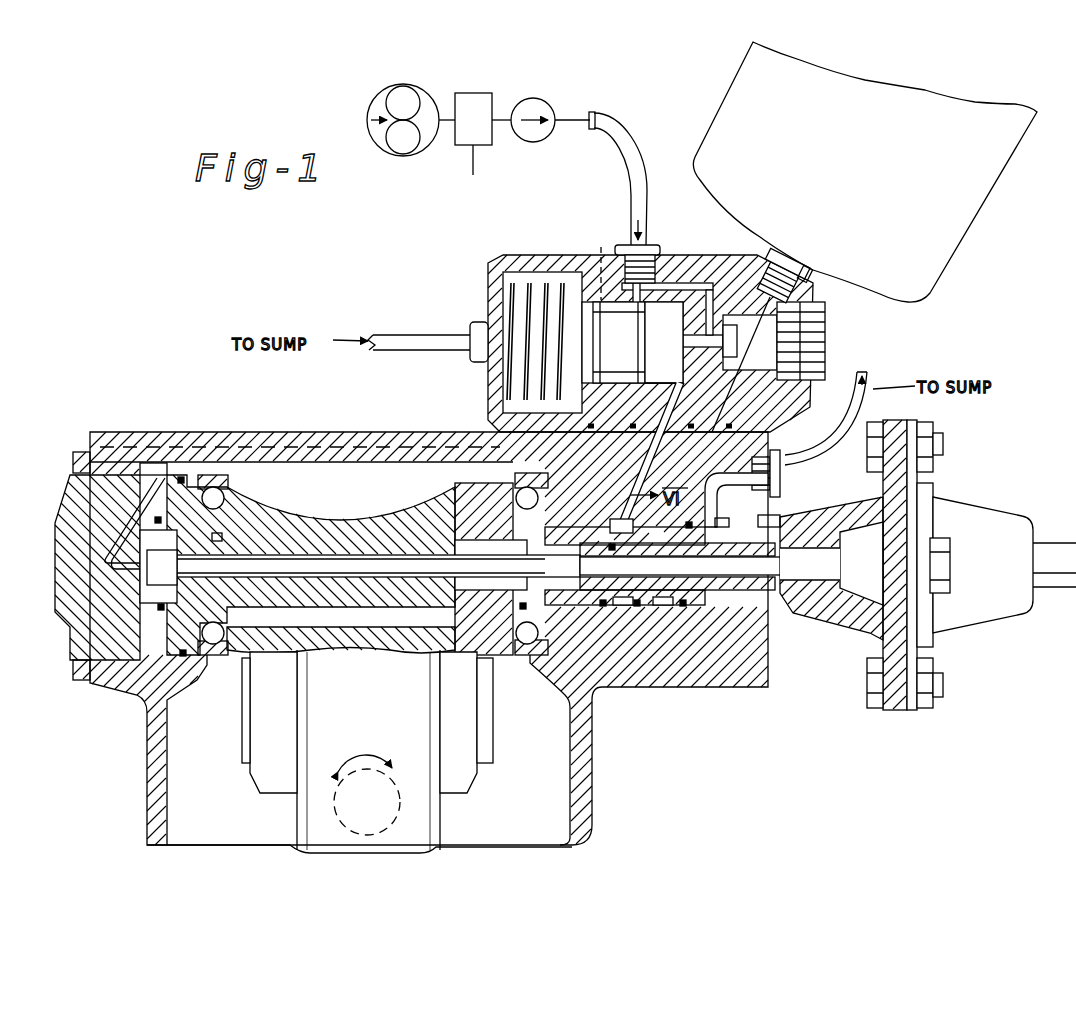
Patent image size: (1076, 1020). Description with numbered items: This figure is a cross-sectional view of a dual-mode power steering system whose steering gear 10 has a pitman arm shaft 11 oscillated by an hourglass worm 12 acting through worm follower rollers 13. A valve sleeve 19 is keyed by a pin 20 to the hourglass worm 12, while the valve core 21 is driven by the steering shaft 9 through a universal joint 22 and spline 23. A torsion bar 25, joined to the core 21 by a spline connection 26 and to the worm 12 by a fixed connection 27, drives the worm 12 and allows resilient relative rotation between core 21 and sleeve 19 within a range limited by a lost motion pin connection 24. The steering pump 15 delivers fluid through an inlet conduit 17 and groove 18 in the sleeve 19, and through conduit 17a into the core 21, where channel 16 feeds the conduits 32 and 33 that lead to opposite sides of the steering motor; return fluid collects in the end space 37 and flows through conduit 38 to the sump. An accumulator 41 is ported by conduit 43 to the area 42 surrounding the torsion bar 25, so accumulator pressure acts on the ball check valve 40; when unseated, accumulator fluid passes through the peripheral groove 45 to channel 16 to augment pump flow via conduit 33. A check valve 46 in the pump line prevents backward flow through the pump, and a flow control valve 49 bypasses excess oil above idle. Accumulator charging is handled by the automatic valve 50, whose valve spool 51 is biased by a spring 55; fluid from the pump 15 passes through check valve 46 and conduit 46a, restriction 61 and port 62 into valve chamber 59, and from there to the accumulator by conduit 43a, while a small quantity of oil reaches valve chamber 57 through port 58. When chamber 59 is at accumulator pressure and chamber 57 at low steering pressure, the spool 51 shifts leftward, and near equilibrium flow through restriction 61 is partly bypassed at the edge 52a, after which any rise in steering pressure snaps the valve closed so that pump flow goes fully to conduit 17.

The steering shaft 9 is at (995, 606).
The steering gear 10 is at (665, 690).
The pitman arm shaft 11 is at (342, 808).
The hourglass worm 12 is at (263, 497).
The worm follower rollers 13 is at (270, 713).
The steering pump 15 is at (380, 92).
The channel 16 is at (614, 550).
The inlet conduit 17 is at (653, 472).
The conduit 17a is at (632, 520).
The groove 18 is at (623, 607).
The valve sleeve 19 is at (678, 607).
The pin 20 is at (505, 518).
The valve core 21 is at (712, 583).
The universal joint 22 is at (906, 711).
The spline 23 is at (827, 602).
The lost motion pin connection 24 is at (473, 531).
The torsion bar 25 is at (370, 563).
The spline connection 26 is at (838, 559).
The fixed connection 27 is at (218, 538).
The conduit 32 is at (709, 537).
The conduit 33 is at (607, 517).
The end space 37 is at (773, 518).
The conduit 38 is at (403, 337).
The check valve 40 is at (508, 578).
The accumulator 41 is at (797, 178).
The area 42 is at (344, 583).
The conduit 43 is at (83, 508).
The conduit 43a is at (785, 298).
The peripheral groove 45 is at (617, 605).
The check valve 46 is at (540, 136).
The conduit 46a is at (655, 248).
The flow control valve 49 is at (477, 93).
The valve 50 is at (562, 252).
The valve spool 51 is at (700, 383).
The edge 52a is at (619, 342).
The spring 55 is at (503, 392).
The valve chamber 57 is at (690, 380).
The port 58 is at (664, 342).
The valve chamber 59 is at (758, 347).
The restriction 61 is at (728, 263).
The port 62 is at (599, 262).